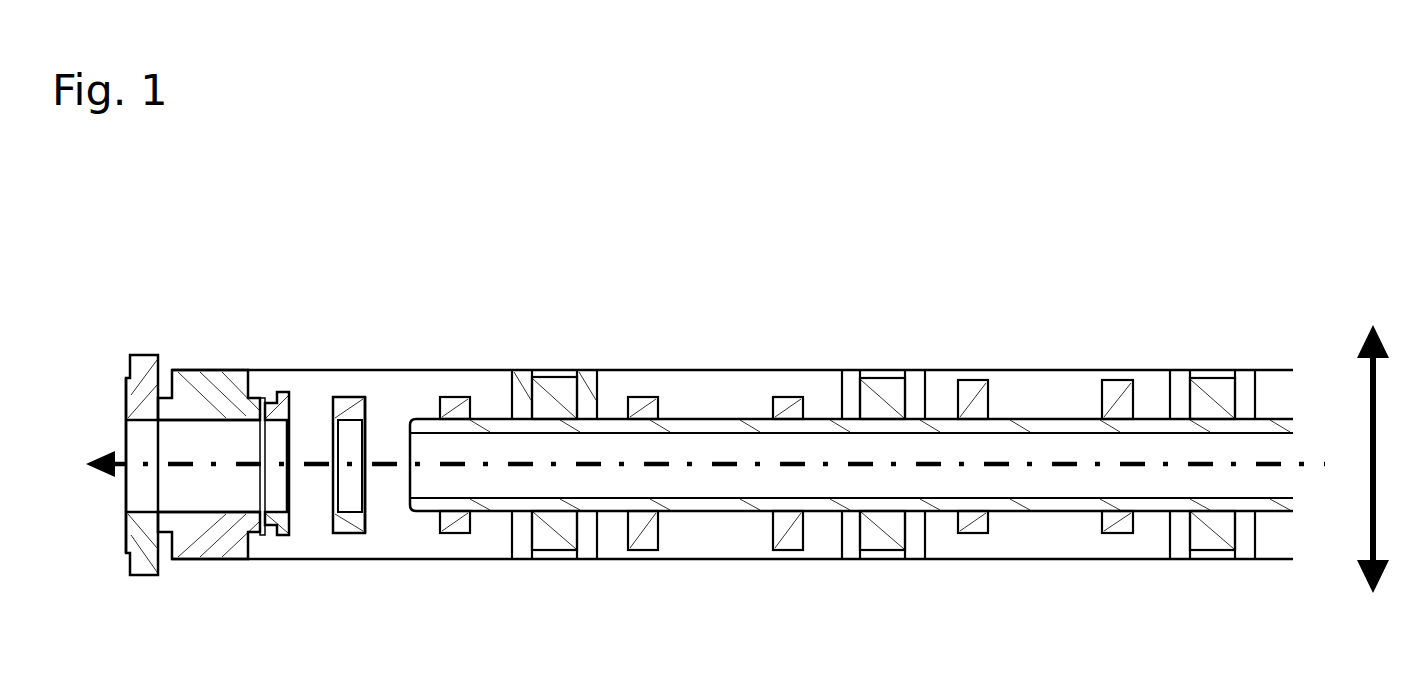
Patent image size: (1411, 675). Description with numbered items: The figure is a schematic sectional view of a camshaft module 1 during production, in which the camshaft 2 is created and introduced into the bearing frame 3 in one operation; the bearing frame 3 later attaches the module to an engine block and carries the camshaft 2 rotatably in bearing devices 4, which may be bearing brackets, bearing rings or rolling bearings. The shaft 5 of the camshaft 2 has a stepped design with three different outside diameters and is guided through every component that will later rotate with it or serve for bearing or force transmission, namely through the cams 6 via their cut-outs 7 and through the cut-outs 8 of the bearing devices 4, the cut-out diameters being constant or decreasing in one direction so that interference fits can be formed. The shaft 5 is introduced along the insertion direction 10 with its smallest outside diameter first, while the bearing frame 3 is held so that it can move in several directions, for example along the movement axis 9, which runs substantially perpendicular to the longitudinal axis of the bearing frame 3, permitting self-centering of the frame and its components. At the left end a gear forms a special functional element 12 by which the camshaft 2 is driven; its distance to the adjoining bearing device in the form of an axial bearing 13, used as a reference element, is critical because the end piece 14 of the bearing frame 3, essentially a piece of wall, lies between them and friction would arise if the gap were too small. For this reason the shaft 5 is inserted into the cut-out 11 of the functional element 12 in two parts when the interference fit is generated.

The camshaft module 1 is at (1127, 266).
The camshaft 2 is at (1085, 379).
The bearing frame 3 is at (985, 370).
The bearing device 4 is at (558, 380).
The shaft 5 is at (678, 420).
The cam 6 is at (342, 400).
The cut-out 7 is at (367, 422).
The cut-out 8 is at (291, 483).
The movement axis 9 is at (1370, 417).
The insertion direction 10 is at (382, 465).
The cut-out 11 is at (119, 420).
The functional element 12 is at (138, 355).
The axial bearing 13 is at (277, 412).
The end piece 14 is at (198, 537).